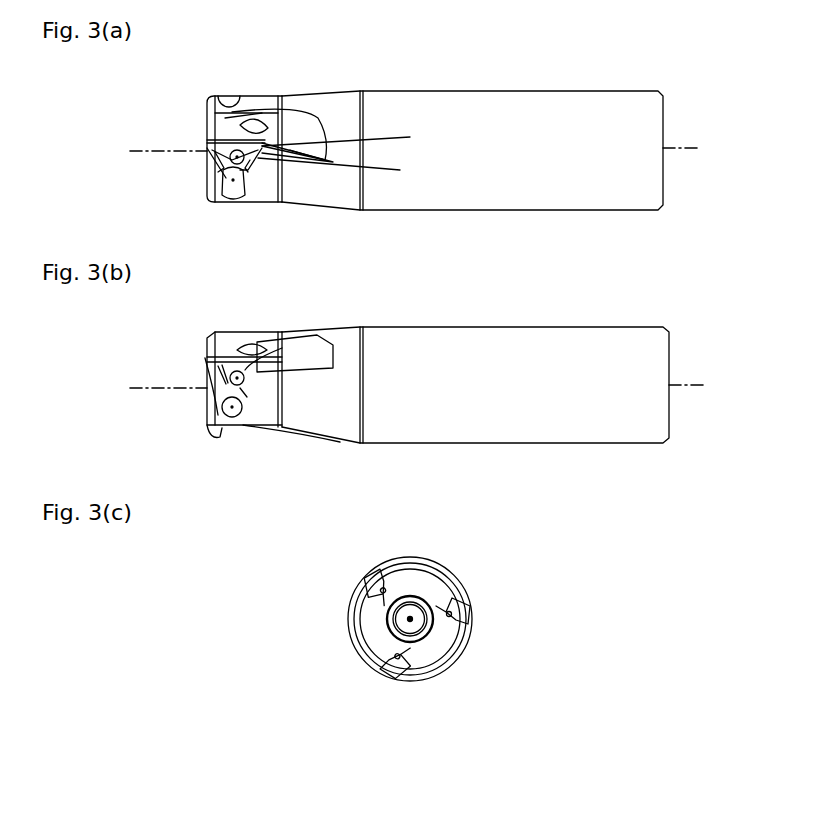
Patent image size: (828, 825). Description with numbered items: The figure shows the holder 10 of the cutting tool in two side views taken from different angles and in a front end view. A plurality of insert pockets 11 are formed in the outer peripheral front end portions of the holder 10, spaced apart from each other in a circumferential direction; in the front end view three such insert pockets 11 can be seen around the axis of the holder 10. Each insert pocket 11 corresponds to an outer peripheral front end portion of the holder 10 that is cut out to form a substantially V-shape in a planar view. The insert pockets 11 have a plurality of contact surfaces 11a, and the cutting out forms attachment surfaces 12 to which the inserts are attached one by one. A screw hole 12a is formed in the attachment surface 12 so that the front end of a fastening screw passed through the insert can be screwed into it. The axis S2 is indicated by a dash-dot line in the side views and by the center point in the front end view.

In FIG. 3A, the holder 10 is at (667, 83).
In FIG. 3B, the holder 10 is at (678, 325).
In FIG. 3C, the holder 10 is at (461, 558).
In FIG. 3A, the insert pocket 11 is at (233, 136).
In FIG. 3B, the insert pocket 11 is at (236, 355).
In FIG. 3C, the insert pocket 11 is at (373, 588).
In FIG. 3A, the contact surface 11a is at (220, 165).
In FIG. 3B, the contact surface 11a is at (223, 368).
In FIG. 3A, the attachment surface 12 is at (321, 134).
In FIG. 3B, the attachment surface 12 is at (222, 366).
In FIG. 3A, the screw hole 12a is at (325, 178).
In FIG. 3B, the screw hole 12a is at (234, 410).
In FIG. 3A, the rotation axis S2 is at (165, 151).
In FIG. 3B, the rotation axis S2 is at (169, 388).
In FIG. 3C, the rotation axis S2 is at (418, 623).